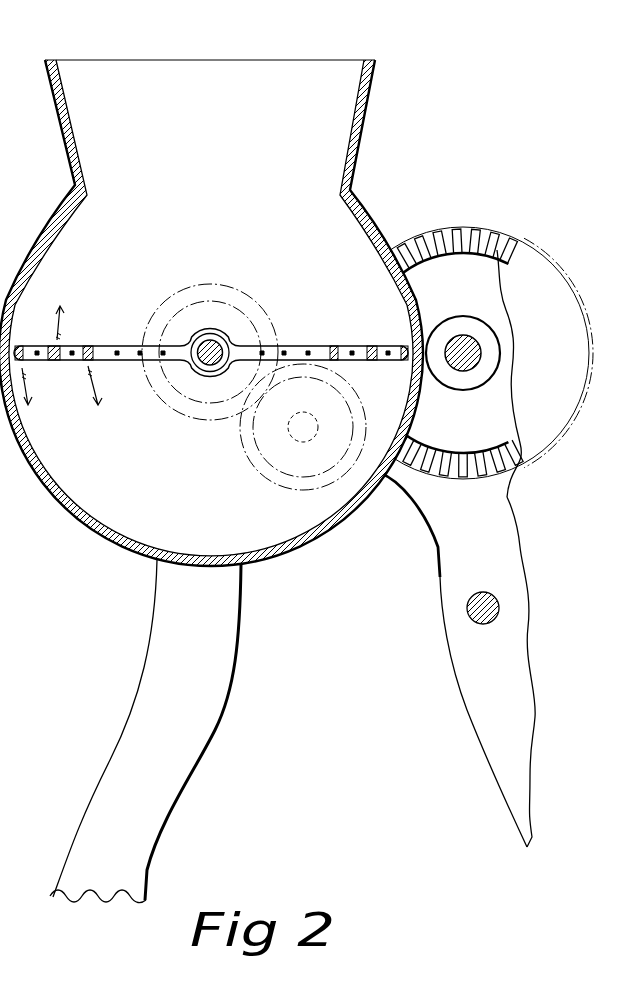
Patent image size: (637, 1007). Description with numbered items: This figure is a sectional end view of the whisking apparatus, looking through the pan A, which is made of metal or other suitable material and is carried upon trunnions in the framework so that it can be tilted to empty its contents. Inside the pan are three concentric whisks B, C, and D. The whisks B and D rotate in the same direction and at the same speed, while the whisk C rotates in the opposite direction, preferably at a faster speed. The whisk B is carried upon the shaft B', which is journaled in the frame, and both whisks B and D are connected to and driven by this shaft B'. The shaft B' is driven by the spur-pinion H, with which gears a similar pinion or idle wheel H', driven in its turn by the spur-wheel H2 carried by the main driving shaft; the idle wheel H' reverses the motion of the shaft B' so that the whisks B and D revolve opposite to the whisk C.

The pan A is at (211, 481).
The whisk B is at (211, 346).
The shaft B' is at (198, 367).
The whisk C is at (62, 355).
The whisk D is at (89, 338).
The spur-pinion H is at (195, 374).
The idle wheel H' is at (284, 437).
The spur-wheel H2 is at (482, 537).